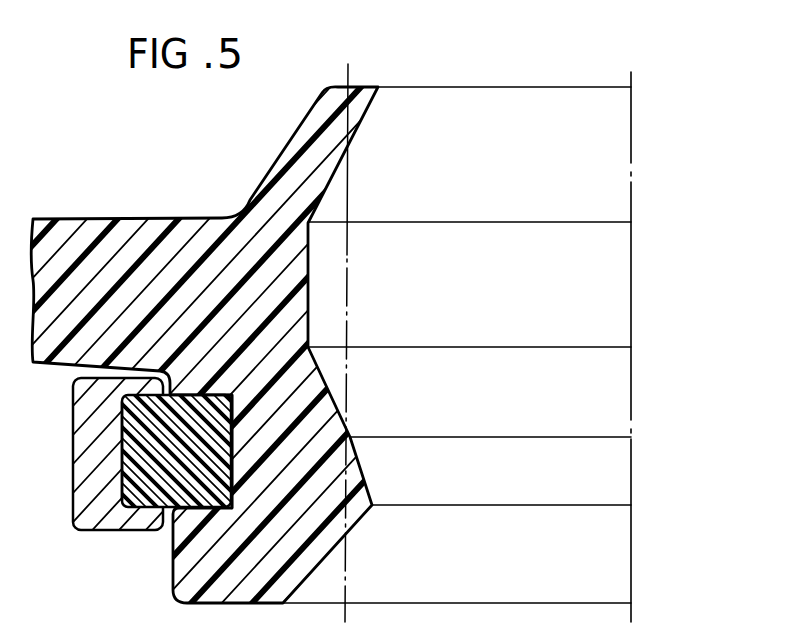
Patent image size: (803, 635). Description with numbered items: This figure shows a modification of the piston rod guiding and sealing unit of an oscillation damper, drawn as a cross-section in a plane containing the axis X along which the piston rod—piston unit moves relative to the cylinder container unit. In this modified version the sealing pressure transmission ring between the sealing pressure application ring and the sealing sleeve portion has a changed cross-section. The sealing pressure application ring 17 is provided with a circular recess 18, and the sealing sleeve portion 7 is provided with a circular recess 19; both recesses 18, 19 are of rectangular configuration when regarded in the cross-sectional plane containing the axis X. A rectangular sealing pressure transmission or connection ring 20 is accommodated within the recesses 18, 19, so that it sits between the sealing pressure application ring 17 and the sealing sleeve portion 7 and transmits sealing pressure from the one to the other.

The sealing sleeve portion 7 is at (220, 541).
The sealing pressure application ring 17 is at (93, 492).
The circular recess 18 is at (122, 428).
The circular recess 19 is at (235, 438).
The sealing pressure transmission ring 20 is at (157, 470).
The axis X is at (631, 198).